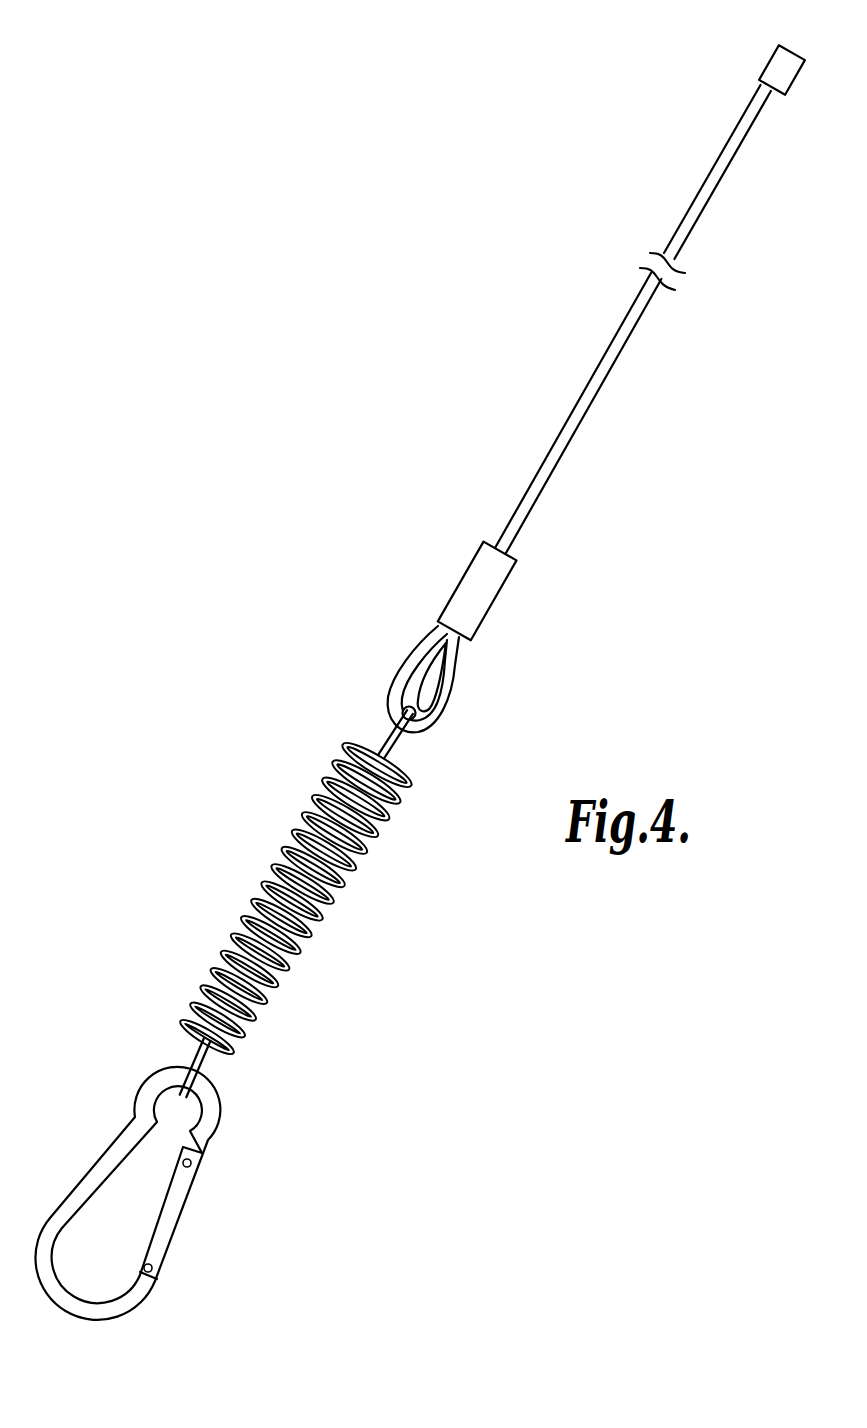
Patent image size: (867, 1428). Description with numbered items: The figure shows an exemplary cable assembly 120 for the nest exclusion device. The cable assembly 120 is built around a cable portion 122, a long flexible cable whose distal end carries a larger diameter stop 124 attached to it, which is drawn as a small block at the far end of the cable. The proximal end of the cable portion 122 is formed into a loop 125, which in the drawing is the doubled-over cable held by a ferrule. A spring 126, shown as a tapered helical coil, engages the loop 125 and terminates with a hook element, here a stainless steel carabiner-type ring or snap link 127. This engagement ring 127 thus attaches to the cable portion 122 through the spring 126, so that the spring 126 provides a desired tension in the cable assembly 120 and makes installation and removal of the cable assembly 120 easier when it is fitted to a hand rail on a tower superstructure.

The cable assembly 120 is at (392, 341).
The cable portion 122 is at (575, 413).
The stop 124 is at (770, 72).
The loop 125 is at (400, 670).
The spring 126 is at (255, 897).
The snap link 127 is at (126, 1080).